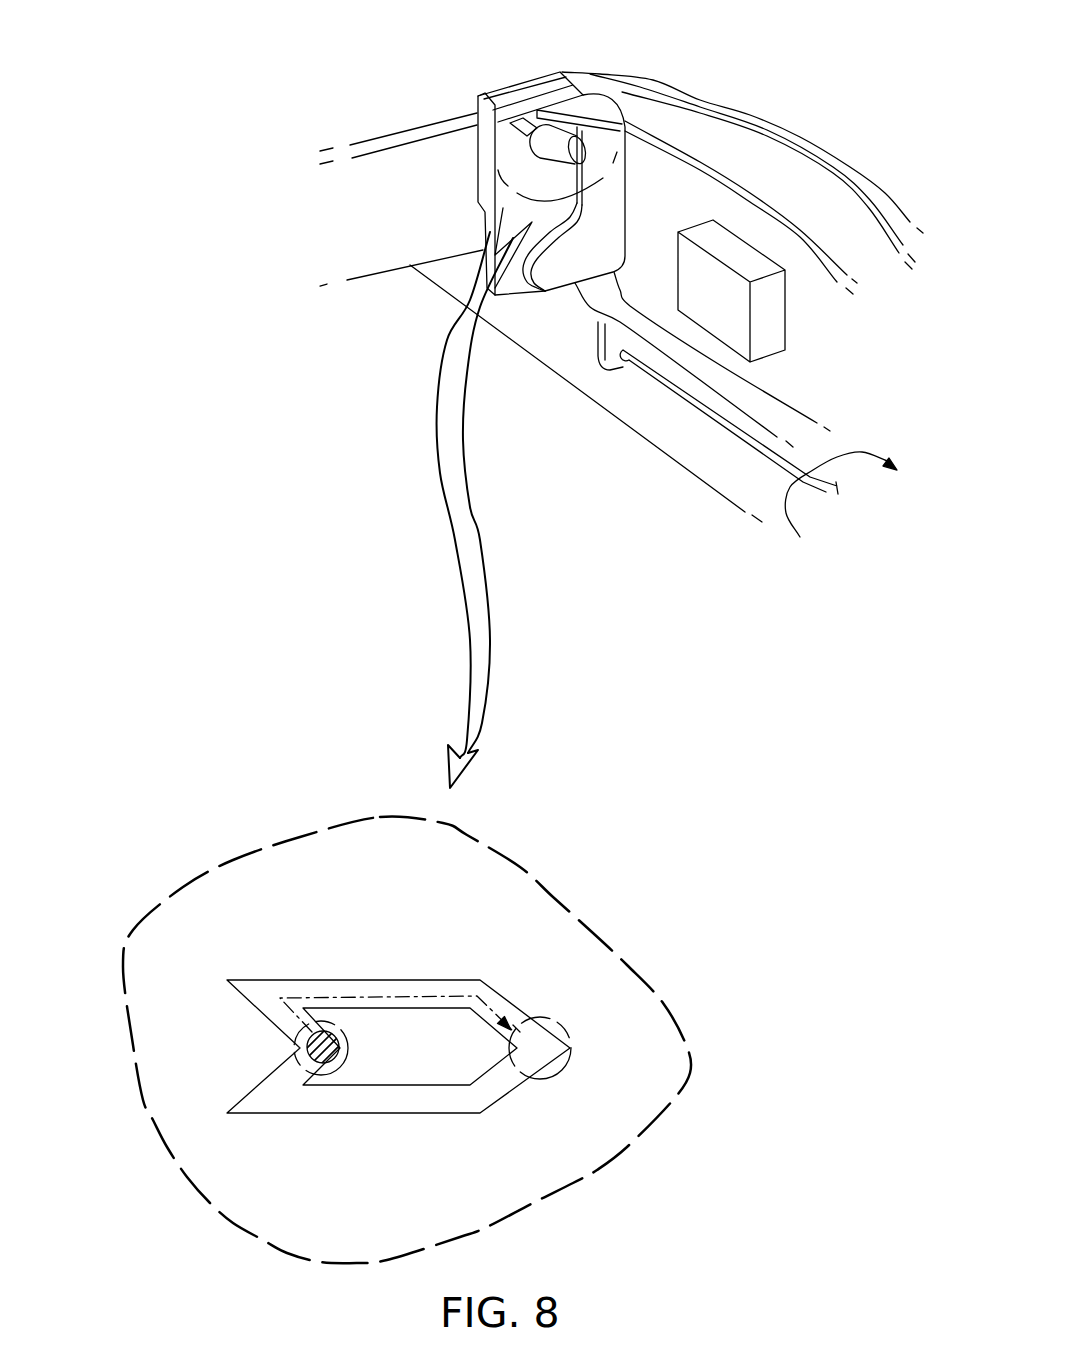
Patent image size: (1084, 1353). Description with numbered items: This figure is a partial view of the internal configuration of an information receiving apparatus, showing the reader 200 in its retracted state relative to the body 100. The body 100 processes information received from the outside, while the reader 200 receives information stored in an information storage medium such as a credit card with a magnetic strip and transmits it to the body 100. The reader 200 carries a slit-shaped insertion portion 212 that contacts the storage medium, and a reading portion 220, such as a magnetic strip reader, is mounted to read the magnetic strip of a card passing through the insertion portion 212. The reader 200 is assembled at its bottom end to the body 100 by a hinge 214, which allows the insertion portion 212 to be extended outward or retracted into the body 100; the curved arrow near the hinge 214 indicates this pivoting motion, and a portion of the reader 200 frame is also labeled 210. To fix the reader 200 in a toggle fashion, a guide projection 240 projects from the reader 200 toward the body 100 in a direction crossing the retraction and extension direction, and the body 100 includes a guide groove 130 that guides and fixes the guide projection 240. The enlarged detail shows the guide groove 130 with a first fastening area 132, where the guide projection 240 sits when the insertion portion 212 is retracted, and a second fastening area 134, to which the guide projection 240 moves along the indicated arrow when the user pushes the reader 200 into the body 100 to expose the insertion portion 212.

The body 100 is at (341, 120).
The guide groove 130 is at (507, 143).
The first fastening area 132 is at (298, 1050).
The second fastening area 134 is at (568, 1028).
The reader 200 is at (826, 128).
The rim 210 is at (732, 113).
The insertion portion 212 is at (842, 190).
The hinge 214 is at (747, 435).
The reading portion 220 is at (740, 322).
The guide projection 240 is at (523, 140).